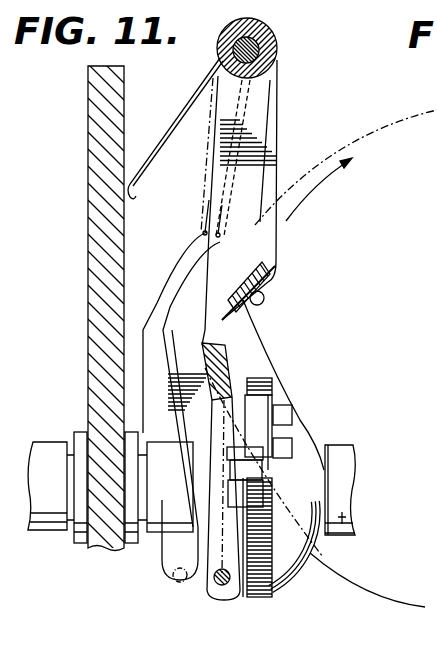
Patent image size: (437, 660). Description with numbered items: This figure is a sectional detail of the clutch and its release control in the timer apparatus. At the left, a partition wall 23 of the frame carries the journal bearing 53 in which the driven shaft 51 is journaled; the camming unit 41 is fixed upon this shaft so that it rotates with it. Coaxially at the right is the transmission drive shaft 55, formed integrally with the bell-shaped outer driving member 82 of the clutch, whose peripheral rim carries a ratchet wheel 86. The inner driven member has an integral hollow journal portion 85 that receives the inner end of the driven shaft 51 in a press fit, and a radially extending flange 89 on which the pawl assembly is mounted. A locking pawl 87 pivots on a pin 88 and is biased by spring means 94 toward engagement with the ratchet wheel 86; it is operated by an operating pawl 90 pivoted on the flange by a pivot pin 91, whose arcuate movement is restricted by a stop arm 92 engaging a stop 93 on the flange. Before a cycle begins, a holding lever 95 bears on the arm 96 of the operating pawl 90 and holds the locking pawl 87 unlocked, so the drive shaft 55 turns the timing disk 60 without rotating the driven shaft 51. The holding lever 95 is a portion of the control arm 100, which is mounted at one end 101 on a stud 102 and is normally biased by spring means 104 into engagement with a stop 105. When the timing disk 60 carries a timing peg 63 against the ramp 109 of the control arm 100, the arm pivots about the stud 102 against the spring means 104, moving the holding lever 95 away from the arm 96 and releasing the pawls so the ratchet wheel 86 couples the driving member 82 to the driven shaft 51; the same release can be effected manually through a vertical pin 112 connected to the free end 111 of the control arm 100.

The partition wall 23 is at (100, 180).
The camming unit 41 is at (40, 515).
The driven shaft 51 is at (138, 468).
The journal bearing 53 is at (81, 432).
The drive shaft 55 is at (341, 522).
The timing disk 60 is at (398, 118).
The timing peg 63 is at (264, 303).
The outer driving member 82 is at (302, 571).
The journal portion 85 is at (173, 513).
The ratchet wheel 86 is at (266, 588).
The locking pawl 87 is at (252, 403).
The pin 88 is at (292, 412).
The flange 89 is at (236, 420).
The operating pawl 90 is at (262, 462).
The pivot pin 91 is at (293, 445).
The stop arm 92 is at (270, 490).
The stop 93 is at (268, 507).
The spring means 94 is at (183, 478).
The holding lever 95 is at (268, 471).
The arm 96 is at (257, 450).
The control arm 100 is at (276, 146).
The end of control arm 101 is at (278, 52).
The stud 102 is at (256, 40).
The spring means 104 is at (185, 97).
The stop 105 is at (236, 368).
The ramp 109 is at (266, 282).
The free end 111 is at (224, 590).
The vertical pin 112 is at (213, 586).